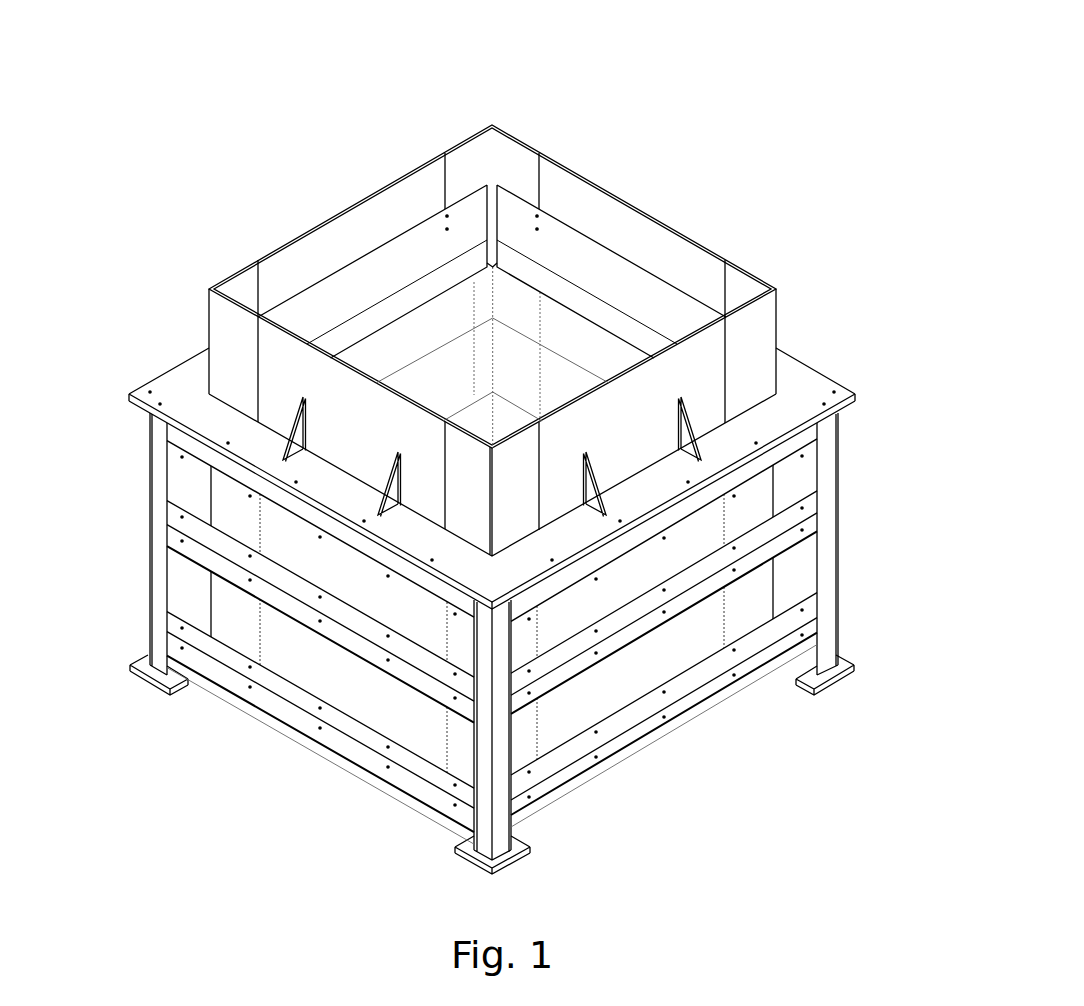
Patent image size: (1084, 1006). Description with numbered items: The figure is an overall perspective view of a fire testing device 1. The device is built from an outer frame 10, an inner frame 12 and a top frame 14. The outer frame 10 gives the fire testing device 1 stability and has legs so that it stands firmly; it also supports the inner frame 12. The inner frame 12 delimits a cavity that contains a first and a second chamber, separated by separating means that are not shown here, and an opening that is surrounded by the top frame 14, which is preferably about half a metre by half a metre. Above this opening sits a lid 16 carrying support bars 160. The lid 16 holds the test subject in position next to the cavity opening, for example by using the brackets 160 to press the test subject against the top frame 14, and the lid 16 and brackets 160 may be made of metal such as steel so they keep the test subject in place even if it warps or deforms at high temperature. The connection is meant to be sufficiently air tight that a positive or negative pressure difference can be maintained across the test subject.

The fire testing device 1 is at (232, 78).
The outer frame 10 is at (257, 697).
The inner frame 12 is at (380, 695).
The top frame 14 is at (797, 392).
The lid 16 is at (285, 382).
The support bars 160 is at (562, 245).